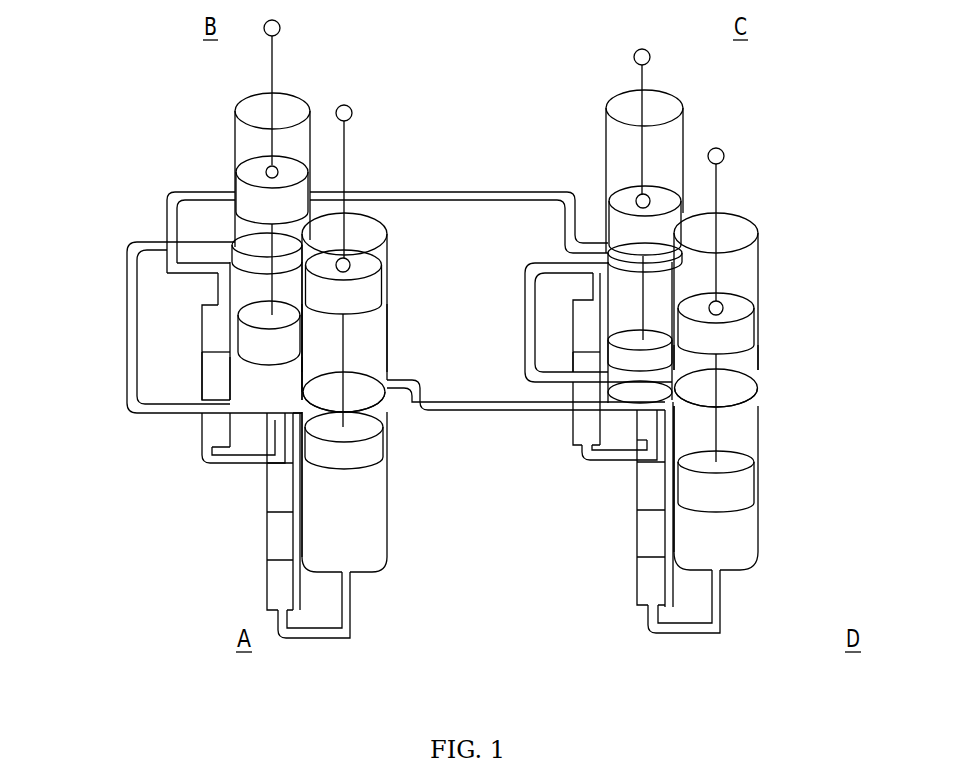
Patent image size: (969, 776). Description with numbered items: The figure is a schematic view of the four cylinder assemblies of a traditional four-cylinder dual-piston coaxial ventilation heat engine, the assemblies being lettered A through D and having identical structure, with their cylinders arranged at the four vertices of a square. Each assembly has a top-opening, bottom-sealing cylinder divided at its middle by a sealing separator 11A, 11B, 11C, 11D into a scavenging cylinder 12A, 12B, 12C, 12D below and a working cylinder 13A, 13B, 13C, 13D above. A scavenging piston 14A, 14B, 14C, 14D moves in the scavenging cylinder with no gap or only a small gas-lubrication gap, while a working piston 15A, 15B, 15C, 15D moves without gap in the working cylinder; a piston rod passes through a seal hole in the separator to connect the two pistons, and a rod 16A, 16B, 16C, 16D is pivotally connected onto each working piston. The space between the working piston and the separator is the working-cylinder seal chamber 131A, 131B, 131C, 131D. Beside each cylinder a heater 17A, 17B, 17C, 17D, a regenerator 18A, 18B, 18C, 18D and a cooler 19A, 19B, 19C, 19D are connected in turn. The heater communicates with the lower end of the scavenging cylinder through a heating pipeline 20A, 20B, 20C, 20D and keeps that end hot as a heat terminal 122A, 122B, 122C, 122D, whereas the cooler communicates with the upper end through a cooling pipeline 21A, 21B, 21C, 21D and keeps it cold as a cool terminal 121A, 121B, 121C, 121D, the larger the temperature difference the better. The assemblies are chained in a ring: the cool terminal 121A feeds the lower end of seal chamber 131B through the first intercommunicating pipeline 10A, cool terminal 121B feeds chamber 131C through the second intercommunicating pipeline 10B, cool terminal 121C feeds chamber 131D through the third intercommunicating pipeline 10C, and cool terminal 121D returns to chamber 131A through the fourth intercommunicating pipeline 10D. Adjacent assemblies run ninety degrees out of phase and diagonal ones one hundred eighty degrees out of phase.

The first intercommunicating pipeline 10A is at (132, 332).
The second intercommunicating pipeline 10B is at (423, 197).
The third intercommunicating pipeline 10C is at (563, 337).
The fourth intercommunicating pipeline 10D is at (533, 407).
The sealing separator 11A is at (365, 390).
The sealing separator 11B is at (248, 268).
The sealing separator 11C is at (608, 243).
The sealing separator 11D is at (743, 395).
The scavenging cylinder 12A is at (417, 513).
The scavenging cylinder 12B is at (192, 328).
The scavenging cylinder 12C is at (617, 363).
The scavenging cylinder 12D is at (790, 425).
The working cylinder 13A is at (463, 230).
The working cylinder 13B is at (217, 112).
The working cylinder 13C is at (697, 115).
The working cylinder 13D is at (788, 252).
The scavenging piston 14A is at (370, 448).
The scavenging piston 14B is at (248, 337).
The scavenging piston 14C is at (617, 303).
The scavenging piston 14D is at (752, 490).
The working piston 15A is at (363, 297).
The working piston 15B is at (250, 193).
The working piston 15C is at (627, 232).
The working piston 15D is at (750, 352).
The rod 16A is at (407, 153).
The rod 16B is at (337, 57).
The rod 16C is at (703, 60).
The rod 16D is at (780, 180).
The heater 17A is at (278, 580).
The heater 17B is at (210, 430).
The heater 17C is at (583, 432).
The heater 17D is at (647, 578).
The regenerator 18A is at (277, 537).
The regenerator 18B is at (217, 377).
The regenerator 18C is at (583, 363).
The regenerator 18D is at (647, 533).
The cooler 19A is at (280, 490).
The cooler 19B is at (215, 332).
The cooler 19C is at (583, 342).
The cooler 19D is at (647, 485).
The heating pipeline 20A is at (347, 608).
The heating pipeline 20B is at (230, 460).
The heating pipeline 20C is at (610, 457).
The heating pipeline 20D is at (720, 607).
The cooling pipeline 21A is at (292, 445).
The cooling pipeline 21B is at (223, 288).
The cooling pipeline 21C is at (620, 262).
The cooling pipeline 21D is at (663, 440).
The cool terminal 121A is at (453, 443).
The cool terminal 121B is at (248, 283).
The cool terminal 121C is at (597, 287).
The cool terminal 121D is at (745, 417).
The heat terminal 122A is at (350, 525).
The heat terminal 122B is at (253, 378).
The heat terminal 122C is at (640, 430).
The heat terminal 122D is at (830, 547).
The working-cylinder seal chamber 131A is at (447, 327).
The working-cylinder seal chamber 131B is at (253, 250).
The working-cylinder seal chamber 131C is at (620, 258).
The working-cylinder seal chamber 131D is at (745, 380).